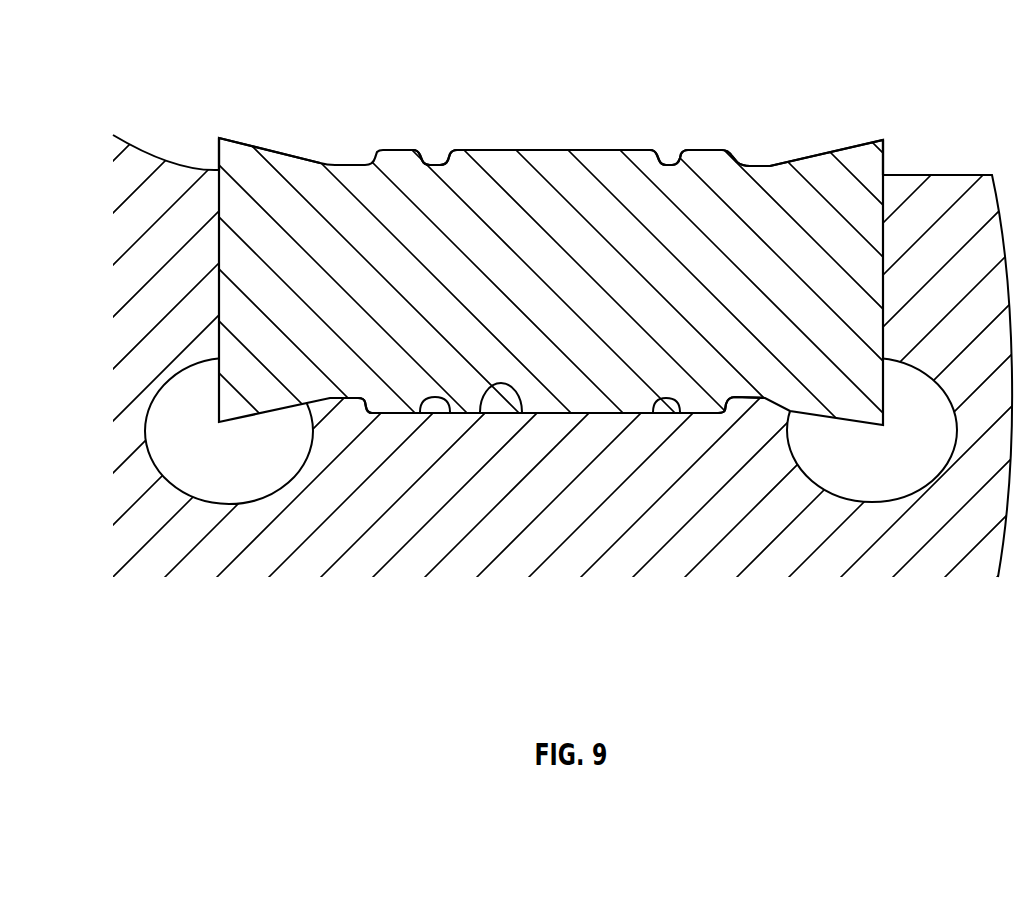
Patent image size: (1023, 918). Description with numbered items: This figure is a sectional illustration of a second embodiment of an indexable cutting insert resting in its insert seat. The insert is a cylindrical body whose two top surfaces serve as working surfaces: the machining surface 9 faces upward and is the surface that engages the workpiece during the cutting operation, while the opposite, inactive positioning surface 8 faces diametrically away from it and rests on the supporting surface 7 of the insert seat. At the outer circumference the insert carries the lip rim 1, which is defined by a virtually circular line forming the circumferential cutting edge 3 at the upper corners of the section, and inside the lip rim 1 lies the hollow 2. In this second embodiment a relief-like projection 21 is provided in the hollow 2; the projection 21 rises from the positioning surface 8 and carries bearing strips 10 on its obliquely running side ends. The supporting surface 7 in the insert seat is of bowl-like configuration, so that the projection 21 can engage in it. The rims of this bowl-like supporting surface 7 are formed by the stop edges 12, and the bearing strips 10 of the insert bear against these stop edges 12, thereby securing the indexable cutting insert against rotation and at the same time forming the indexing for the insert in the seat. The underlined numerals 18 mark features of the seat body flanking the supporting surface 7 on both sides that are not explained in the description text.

The lip rim 1 is at (258, 147).
The hollow 2 is at (772, 150).
The cutting edge 3 is at (218, 138).
The supporting surface 7 is at (478, 408).
The positioning surface 8 is at (553, 413).
The machining surface 9 is at (505, 150).
The bearing strip 10 is at (371, 160).
The stop edge 12 is at (362, 402).
The channel 18 is at (231, 472).
The relief-like projection 21 is at (601, 150).